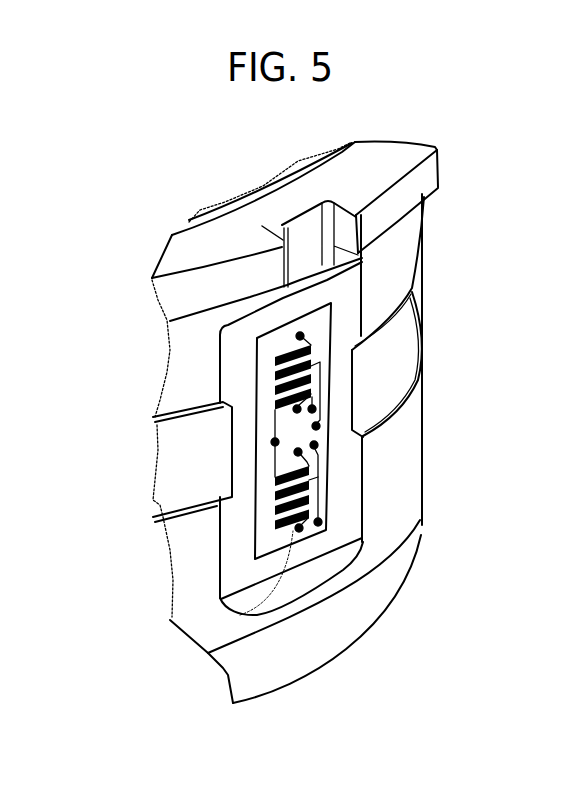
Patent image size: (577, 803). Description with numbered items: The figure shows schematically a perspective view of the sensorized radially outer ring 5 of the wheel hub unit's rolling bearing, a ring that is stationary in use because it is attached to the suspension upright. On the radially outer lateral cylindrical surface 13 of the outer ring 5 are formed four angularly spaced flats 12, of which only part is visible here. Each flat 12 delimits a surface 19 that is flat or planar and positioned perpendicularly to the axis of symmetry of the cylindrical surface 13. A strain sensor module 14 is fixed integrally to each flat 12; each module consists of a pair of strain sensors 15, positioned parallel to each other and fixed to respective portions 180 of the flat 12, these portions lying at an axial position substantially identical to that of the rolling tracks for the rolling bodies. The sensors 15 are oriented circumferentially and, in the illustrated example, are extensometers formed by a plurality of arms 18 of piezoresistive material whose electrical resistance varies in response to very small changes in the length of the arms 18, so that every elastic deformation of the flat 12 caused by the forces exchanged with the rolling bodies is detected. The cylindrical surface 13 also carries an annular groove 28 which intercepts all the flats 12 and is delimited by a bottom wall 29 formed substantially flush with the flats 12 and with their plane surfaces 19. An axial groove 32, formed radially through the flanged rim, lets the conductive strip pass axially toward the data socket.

The radially outer ring 5 is at (428, 196).
The axial groove 32 is at (286, 236).
The flat 12 is at (350, 463).
The radially outer lateral cylindrical surface 13 is at (408, 507).
The bottom wall 29 is at (392, 368).
The portion 180 is at (320, 338).
The arm 18 is at (272, 410).
The strain sensor 15 is at (285, 355).
The surface 19 is at (242, 430).
The annular groove 28 is at (160, 484).
The strain sensor module 14 is at (240, 614).